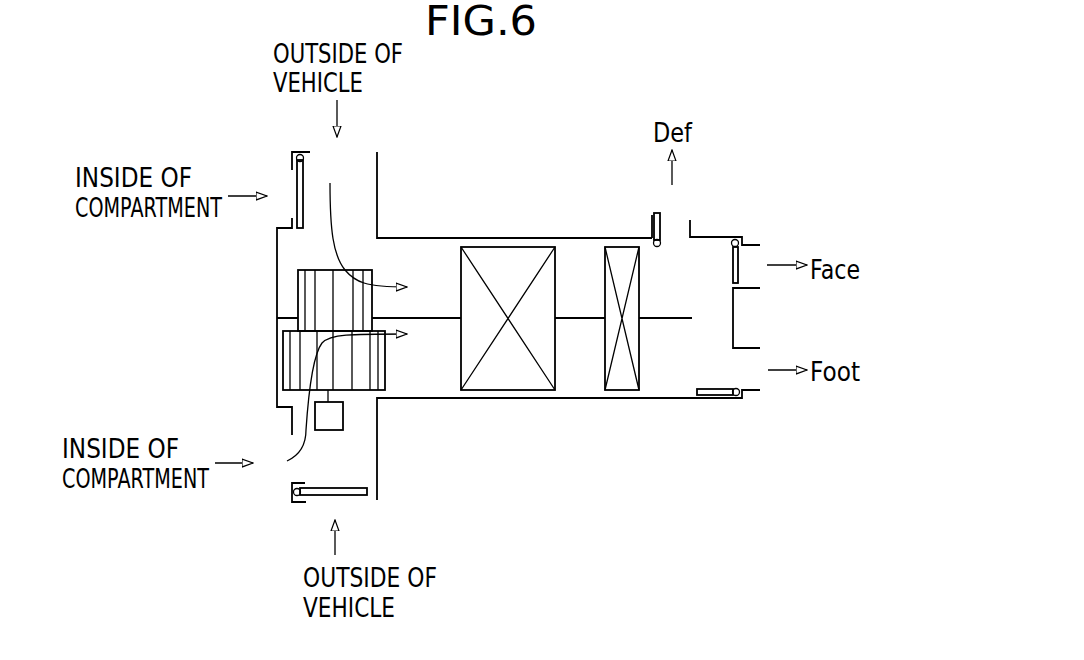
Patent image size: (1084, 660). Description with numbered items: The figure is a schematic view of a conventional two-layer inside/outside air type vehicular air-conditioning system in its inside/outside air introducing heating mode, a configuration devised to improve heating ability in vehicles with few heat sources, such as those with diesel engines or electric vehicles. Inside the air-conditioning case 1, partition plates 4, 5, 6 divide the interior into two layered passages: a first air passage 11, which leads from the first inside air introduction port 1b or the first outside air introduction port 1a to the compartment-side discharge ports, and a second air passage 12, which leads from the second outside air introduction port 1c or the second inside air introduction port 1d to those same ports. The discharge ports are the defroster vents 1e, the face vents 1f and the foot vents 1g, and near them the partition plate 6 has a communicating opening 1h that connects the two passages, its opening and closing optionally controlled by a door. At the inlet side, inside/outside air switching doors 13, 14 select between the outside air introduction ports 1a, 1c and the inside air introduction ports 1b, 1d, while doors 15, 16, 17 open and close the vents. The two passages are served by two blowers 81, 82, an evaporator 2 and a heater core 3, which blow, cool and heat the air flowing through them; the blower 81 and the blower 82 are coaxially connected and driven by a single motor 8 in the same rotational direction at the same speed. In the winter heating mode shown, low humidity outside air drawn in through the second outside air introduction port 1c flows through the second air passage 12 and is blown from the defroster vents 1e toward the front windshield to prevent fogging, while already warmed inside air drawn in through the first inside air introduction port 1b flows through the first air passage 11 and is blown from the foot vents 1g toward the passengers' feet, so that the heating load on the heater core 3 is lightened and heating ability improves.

The air-conditioning case 1 is at (428, 238).
The first outside air introduction port 1a is at (353, 500).
The first inside air introduction port 1b is at (290, 448).
The second outside air introduction port 1c is at (358, 162).
The second inside air introduction port 1d is at (290, 182).
The defroster vents 1e is at (677, 222).
The face vents 1f is at (758, 275).
The foot vents 1g is at (758, 377).
The communicating opening 1h is at (710, 320).
The evaporator 2 is at (525, 255).
The heater core 3 is at (620, 257).
The partition plate 4 is at (413, 320).
The partition plate 5 is at (567, 325).
The partition plate 6 is at (658, 320).
The motor 8 is at (343, 415).
The first air passage 11 is at (450, 380).
The second air passage 12 is at (567, 252).
The inside/outside air switching door 13 is at (320, 497).
The inside/outside air switching door 14 is at (290, 205).
The door 15 is at (650, 192).
The door 16 is at (740, 262).
The door 17 is at (713, 400).
The blower 81 is at (308, 352).
The blower 82 is at (308, 280).